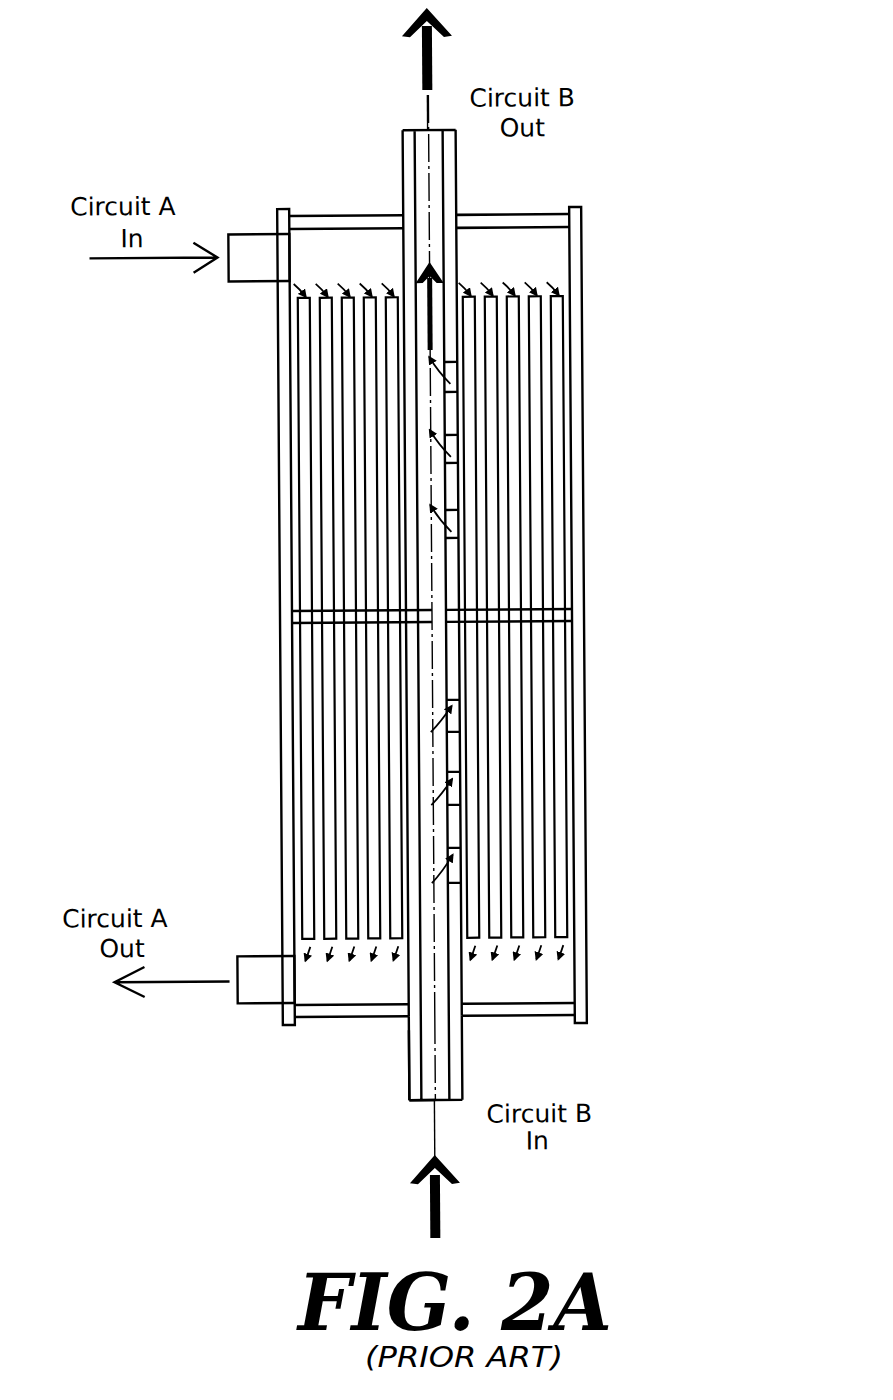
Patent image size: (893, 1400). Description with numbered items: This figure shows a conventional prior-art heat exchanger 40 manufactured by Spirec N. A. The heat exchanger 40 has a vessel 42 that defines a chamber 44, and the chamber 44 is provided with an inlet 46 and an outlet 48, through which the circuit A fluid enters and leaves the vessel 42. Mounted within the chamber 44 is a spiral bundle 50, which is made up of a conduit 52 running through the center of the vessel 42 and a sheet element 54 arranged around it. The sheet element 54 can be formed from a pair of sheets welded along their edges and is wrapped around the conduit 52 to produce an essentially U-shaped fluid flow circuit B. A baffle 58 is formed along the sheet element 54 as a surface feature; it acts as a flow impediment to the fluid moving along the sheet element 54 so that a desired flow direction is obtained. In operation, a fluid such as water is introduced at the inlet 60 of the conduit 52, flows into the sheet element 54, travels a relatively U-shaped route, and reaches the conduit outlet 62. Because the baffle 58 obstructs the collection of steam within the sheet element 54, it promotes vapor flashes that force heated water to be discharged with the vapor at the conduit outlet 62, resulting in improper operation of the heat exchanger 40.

The heat exchanger 40 is at (661, 276).
The vessel 42 is at (590, 391).
The chamber 44 is at (540, 977).
The inlet 46 is at (252, 282).
The outlet 48 is at (256, 955).
The spiral bundle 50 is at (551, 292).
The conduit 52 is at (403, 1074).
The sheet element 54 is at (568, 719).
The baffle 58 is at (553, 607).
The inlet of the conduit 60 is at (462, 1056).
The conduit outlet 62 is at (403, 163).